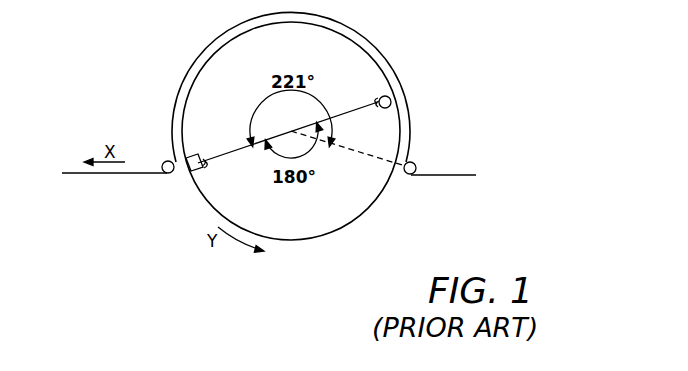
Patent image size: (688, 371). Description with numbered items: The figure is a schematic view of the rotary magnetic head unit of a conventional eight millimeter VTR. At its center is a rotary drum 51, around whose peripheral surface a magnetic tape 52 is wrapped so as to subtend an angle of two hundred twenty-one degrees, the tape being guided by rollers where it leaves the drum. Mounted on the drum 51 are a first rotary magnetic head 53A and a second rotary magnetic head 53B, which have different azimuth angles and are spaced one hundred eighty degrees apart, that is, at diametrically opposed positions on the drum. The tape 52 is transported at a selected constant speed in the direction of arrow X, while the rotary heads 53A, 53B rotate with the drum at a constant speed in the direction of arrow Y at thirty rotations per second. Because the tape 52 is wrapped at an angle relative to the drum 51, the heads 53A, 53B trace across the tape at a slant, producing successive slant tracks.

The rotary drum 51 is at (362, 205).
The magnetic tape 52 is at (450, 177).
The first rotary magnetic head 53A is at (393, 92).
The second rotary magnetic head 53B is at (200, 178).